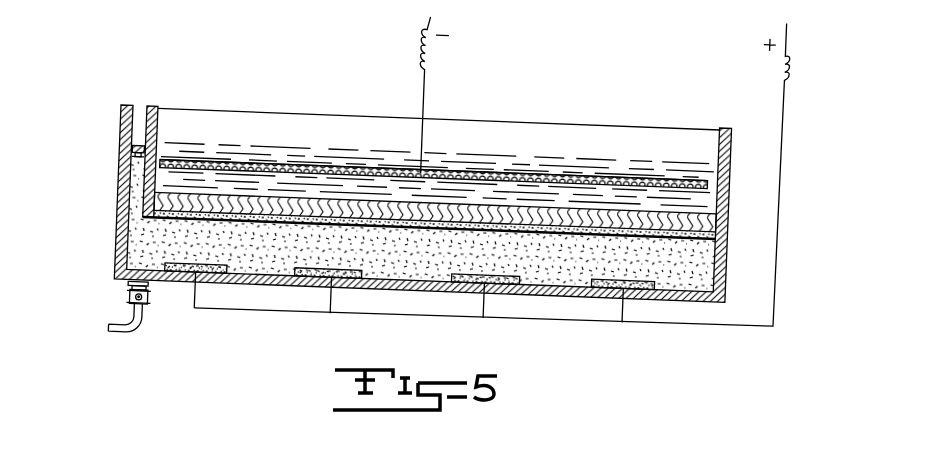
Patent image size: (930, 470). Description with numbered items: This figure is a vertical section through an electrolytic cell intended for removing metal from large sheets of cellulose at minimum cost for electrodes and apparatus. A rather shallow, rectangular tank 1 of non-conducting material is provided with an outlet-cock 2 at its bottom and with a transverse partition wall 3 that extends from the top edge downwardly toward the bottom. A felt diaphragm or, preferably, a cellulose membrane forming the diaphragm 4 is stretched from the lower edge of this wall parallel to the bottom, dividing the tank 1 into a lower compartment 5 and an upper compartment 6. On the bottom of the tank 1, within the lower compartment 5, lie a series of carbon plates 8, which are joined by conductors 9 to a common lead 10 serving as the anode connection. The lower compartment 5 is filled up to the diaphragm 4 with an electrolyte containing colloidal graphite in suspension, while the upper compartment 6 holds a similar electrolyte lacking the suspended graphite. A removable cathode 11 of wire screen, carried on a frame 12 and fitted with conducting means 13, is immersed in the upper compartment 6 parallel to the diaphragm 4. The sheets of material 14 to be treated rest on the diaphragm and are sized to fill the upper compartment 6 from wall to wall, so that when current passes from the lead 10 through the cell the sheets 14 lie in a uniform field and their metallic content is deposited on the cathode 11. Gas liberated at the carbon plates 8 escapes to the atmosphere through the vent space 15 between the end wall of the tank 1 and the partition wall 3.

The tank 1 is at (410, 203).
The outlet-cock 2 is at (122, 306).
The transverse partition wall 3 is at (432, 161).
The diaphragm 4 is at (446, 231).
The lower compartment 5 is at (422, 225).
The upper compartment 6 is at (437, 177).
The carbon plates 8 is at (409, 283).
The conductors 9 is at (421, 299).
The common lead 10 is at (577, 199).
The cathode 11 is at (434, 154).
The frame 12 is at (434, 150).
The conducting means 13 is at (436, 95).
The sheets of material 14 is at (455, 205).
The vent space 15 is at (114, 149).